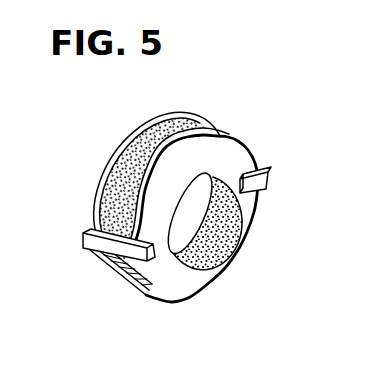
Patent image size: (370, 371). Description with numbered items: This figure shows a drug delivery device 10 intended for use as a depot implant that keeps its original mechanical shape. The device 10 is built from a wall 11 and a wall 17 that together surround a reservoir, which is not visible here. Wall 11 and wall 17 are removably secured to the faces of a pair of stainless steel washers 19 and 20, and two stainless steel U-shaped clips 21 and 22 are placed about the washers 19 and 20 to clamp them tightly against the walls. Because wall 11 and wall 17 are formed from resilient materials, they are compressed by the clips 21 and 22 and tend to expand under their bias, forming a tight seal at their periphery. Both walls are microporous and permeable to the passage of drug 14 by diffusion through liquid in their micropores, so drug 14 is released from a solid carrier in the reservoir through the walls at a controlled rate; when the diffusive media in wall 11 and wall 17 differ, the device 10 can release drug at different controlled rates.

The drug delivery device 10 is at (181, 202).
The wall 11 is at (129, 158).
The drug 14 is at (158, 133).
The wall 17 is at (223, 224).
The stainless steel washer 19 is at (100, 199).
The stainless steel washer 20 is at (178, 282).
The U-shaped clip 21 is at (97, 243).
The U-shaped clip 22 is at (269, 184).